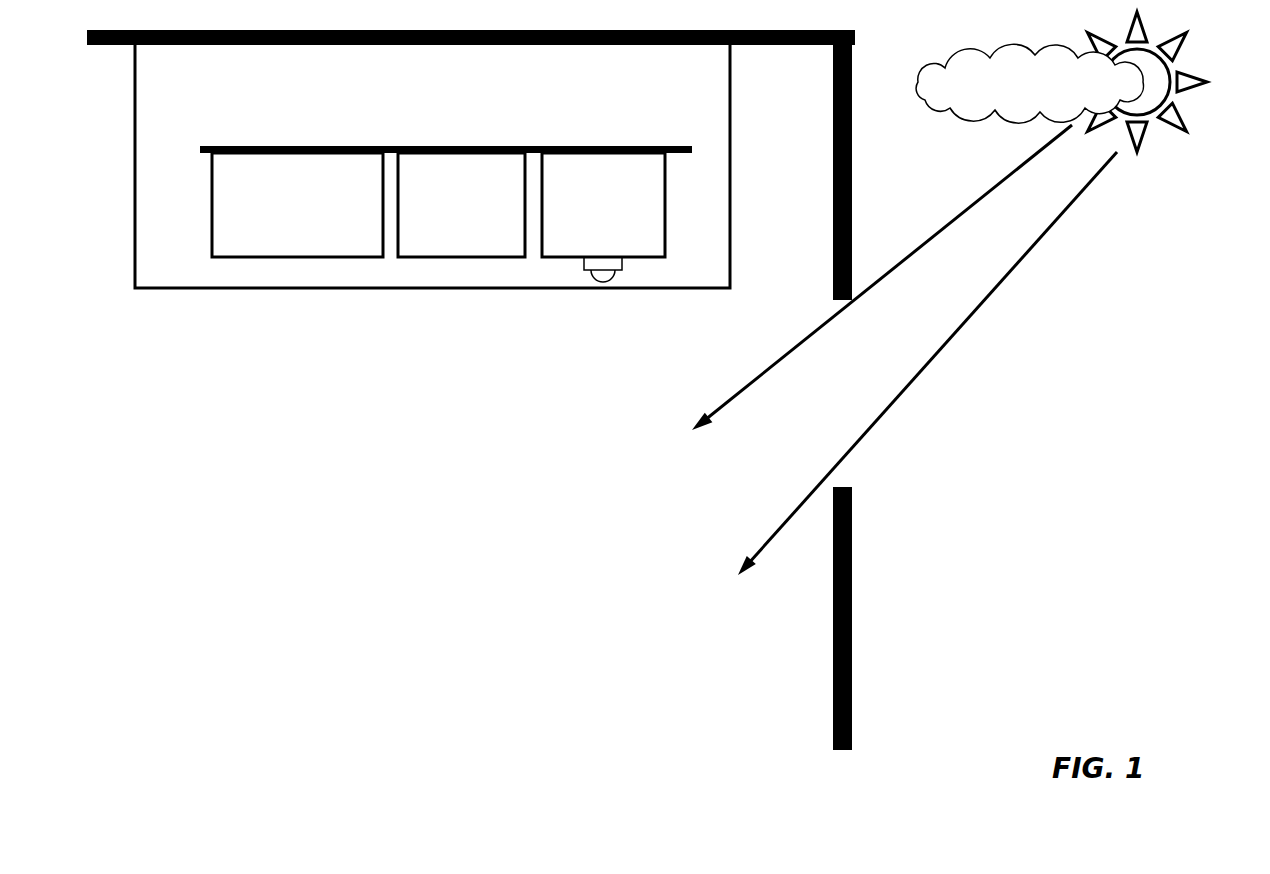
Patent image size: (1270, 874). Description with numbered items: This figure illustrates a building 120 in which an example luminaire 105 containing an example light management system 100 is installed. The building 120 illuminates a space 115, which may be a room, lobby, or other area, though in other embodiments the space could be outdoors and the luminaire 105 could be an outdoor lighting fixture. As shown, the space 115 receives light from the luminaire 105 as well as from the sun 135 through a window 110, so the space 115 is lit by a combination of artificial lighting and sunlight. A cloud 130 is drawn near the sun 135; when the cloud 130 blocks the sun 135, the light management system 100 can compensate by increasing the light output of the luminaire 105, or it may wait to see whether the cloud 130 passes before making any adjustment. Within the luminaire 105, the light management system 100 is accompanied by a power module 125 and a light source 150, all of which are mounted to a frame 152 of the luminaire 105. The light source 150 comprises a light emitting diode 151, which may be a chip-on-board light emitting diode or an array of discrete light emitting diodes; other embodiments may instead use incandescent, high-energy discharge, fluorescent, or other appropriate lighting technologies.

The light management system 100 is at (356, 246).
The luminaire 105 is at (506, 74).
The window 110 is at (843, 394).
The space 115 is at (376, 597).
The building 120 is at (858, 629).
The power module 125 is at (443, 246).
The cloud 130 is at (1003, 98).
The sun 135 is at (1153, 115).
The light source 150 is at (584, 246).
The light emitting diode 151 is at (616, 275).
The frame 152 is at (684, 146).